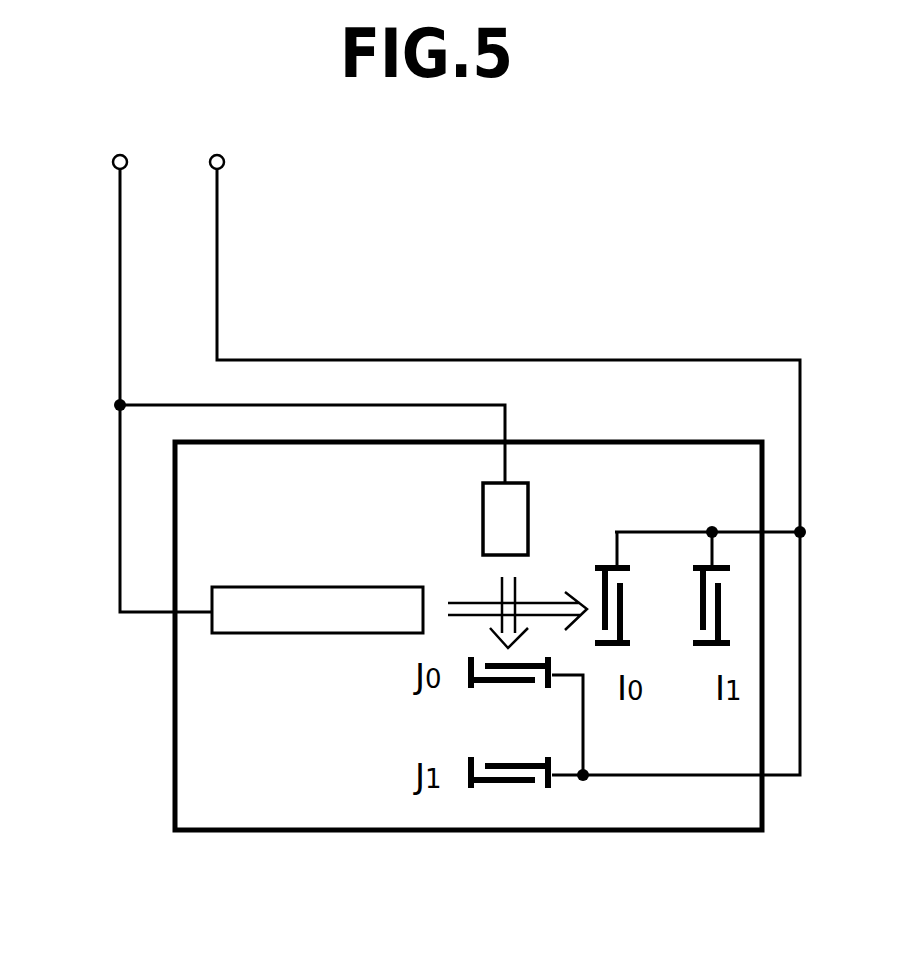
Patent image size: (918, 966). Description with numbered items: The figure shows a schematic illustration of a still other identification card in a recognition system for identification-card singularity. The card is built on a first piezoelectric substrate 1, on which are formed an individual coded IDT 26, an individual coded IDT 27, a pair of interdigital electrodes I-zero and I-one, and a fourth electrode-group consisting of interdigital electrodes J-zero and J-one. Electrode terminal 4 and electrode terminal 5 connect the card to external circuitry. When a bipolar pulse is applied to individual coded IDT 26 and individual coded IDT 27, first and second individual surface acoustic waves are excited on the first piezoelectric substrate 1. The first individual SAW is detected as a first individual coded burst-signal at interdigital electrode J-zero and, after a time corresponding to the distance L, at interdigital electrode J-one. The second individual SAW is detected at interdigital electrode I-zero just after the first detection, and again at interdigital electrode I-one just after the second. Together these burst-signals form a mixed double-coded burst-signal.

The first piezoelectric substrate 1 is at (197, 704).
The electrode terminal 4 is at (287, 374).
The electrode terminal 5 is at (508, 459).
The individual coded IDT 26 is at (638, 310).
The individual coded IDT 27 is at (298, 608).